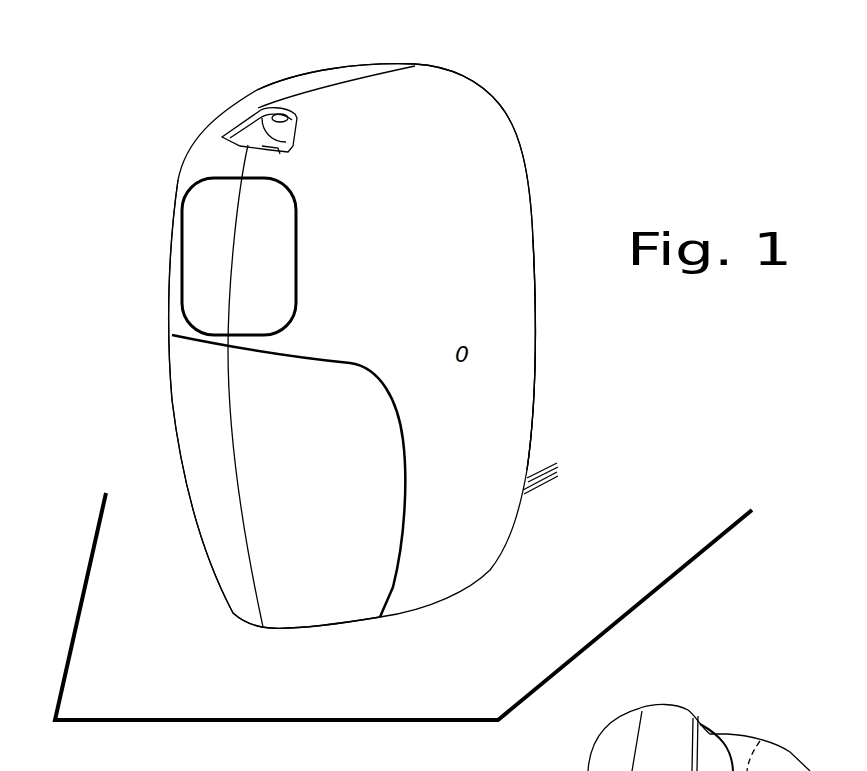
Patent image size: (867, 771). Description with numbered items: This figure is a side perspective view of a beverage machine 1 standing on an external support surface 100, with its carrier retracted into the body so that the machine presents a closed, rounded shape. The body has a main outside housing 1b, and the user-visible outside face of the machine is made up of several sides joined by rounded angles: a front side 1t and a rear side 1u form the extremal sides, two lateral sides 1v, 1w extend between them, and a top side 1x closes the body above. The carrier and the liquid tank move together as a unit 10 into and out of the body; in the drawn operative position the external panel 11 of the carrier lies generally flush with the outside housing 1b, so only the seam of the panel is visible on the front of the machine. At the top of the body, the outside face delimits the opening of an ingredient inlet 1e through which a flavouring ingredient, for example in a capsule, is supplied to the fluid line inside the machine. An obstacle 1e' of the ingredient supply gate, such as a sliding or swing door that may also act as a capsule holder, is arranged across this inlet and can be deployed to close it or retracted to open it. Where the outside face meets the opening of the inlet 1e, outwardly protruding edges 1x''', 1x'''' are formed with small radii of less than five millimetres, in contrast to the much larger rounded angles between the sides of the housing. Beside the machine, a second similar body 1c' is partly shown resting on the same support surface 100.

The beverage machine 1 is at (172, 50).
The top side 1x is at (378, 52).
The main outside housing 1b is at (495, 163).
The rear side 1u is at (568, 281).
The lateral side 1v is at (567, 426).
The lateral side 1w is at (142, 292).
The front side 1t is at (130, 400).
The external panel 11 is at (263, 458).
The unit 10 is at (234, 615).
The ingredient inlet 1e is at (231, 111).
The ingredient supply gate obstacle 1e' is at (252, 88).
The outwardly protruding edge 1x''' is at (328, 115).
The outwardly protruding edge 1x'''' is at (317, 171).
The external support surface 100 is at (635, 563).
The second bag 1c' is at (699, 723).